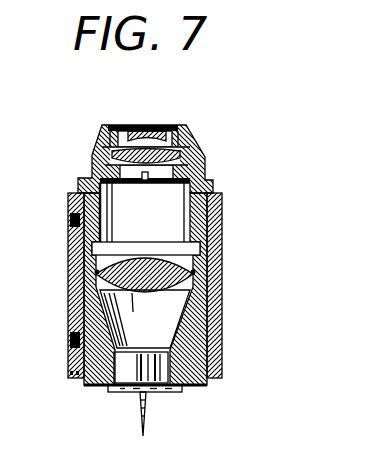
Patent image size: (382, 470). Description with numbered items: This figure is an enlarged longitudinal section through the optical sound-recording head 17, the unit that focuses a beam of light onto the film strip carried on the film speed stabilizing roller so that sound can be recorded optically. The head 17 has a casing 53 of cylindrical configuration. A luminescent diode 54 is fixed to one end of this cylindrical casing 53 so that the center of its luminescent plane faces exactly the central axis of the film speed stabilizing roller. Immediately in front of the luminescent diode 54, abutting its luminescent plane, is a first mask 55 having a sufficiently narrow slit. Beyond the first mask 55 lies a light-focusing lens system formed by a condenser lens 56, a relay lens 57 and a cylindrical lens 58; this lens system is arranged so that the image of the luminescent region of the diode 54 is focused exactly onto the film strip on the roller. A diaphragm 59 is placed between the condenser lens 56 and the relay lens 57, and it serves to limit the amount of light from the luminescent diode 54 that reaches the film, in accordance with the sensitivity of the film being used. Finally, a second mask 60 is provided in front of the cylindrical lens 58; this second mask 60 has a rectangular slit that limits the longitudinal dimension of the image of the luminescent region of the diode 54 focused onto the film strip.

The optical sound-recording head 17 is at (224, 205).
The casing 53 is at (212, 292).
The luminescent diode 54 is at (125, 375).
The first mask 55 is at (153, 348).
The condenser lens 56 is at (195, 277).
The relay lens 57 is at (175, 156).
The cylindrical lens 58 is at (158, 126).
The diaphragm 59 is at (167, 184).
The second mask 60 is at (132, 126).